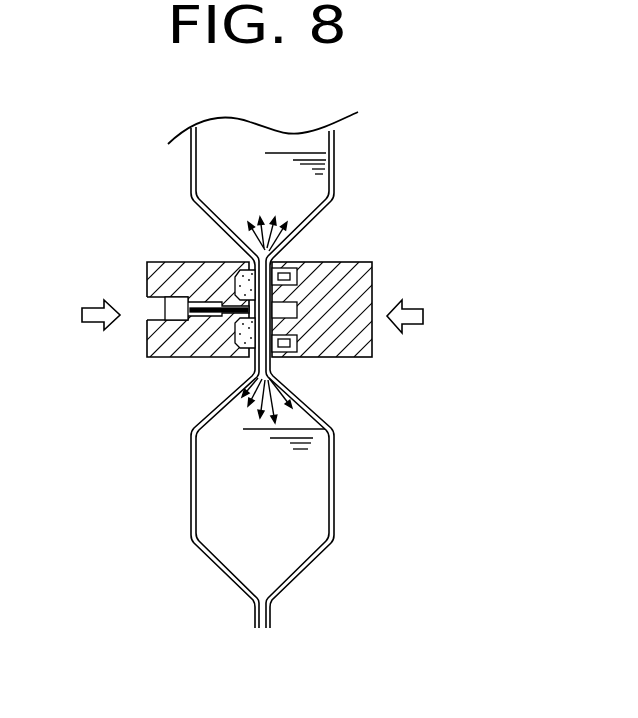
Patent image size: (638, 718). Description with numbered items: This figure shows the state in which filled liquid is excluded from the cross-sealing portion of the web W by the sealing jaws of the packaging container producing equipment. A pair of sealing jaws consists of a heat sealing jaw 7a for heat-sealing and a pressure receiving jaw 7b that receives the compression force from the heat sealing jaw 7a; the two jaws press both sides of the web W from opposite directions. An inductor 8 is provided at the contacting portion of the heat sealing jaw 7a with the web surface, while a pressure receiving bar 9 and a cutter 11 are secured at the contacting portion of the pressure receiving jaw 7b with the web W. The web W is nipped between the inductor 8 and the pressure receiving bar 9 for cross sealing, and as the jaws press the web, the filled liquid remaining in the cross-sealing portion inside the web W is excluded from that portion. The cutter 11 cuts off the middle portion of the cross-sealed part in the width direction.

The heat sealing jaw 7a is at (372, 278).
The pressure receiving jaw 7b is at (163, 272).
The inductor 8 is at (297, 276).
The pressure receiving bar 9 is at (237, 277).
The cutter 11 is at (180, 314).
The web W is at (333, 162).